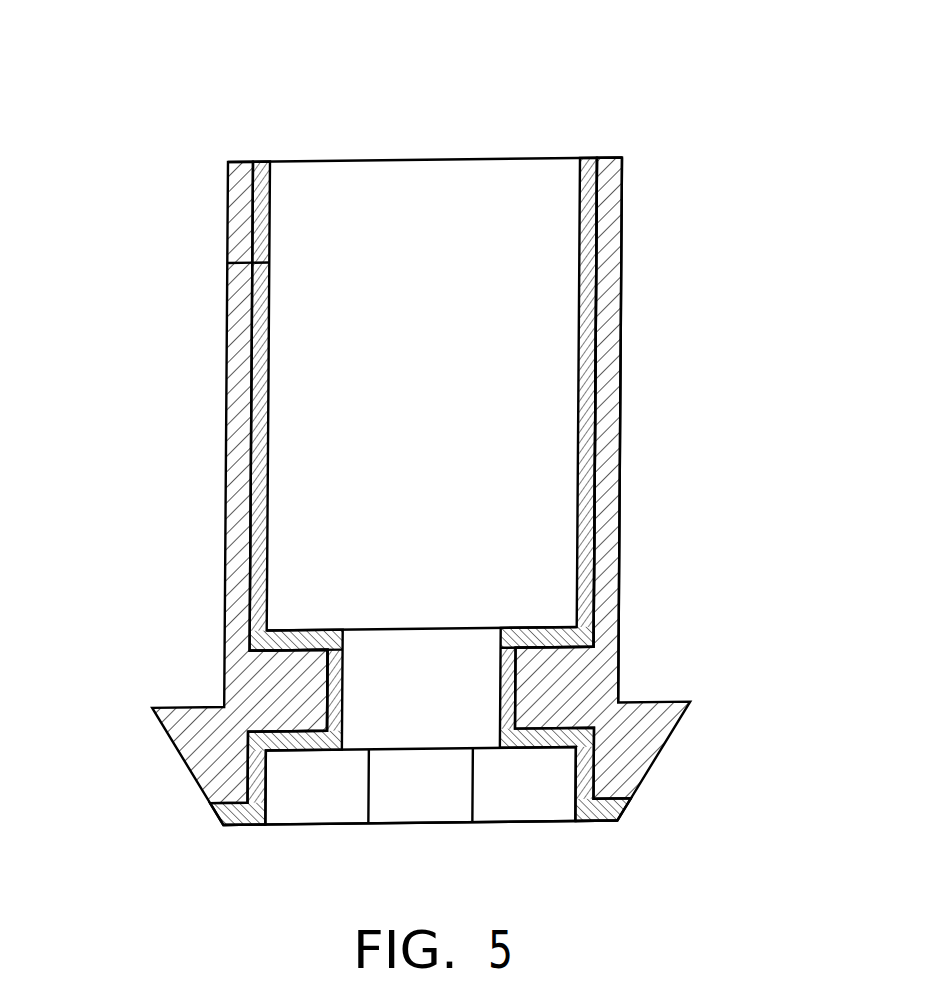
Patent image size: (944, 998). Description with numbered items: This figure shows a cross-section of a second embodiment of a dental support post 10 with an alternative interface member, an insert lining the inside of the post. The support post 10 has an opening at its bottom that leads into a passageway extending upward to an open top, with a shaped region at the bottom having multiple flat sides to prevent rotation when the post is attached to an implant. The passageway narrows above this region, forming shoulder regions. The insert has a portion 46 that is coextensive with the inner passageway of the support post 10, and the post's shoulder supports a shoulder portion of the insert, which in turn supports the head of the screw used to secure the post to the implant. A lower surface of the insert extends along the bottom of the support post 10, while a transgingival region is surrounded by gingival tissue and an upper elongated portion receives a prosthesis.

The support post 10 is at (433, 493).
The portion 46 is at (228, 263).